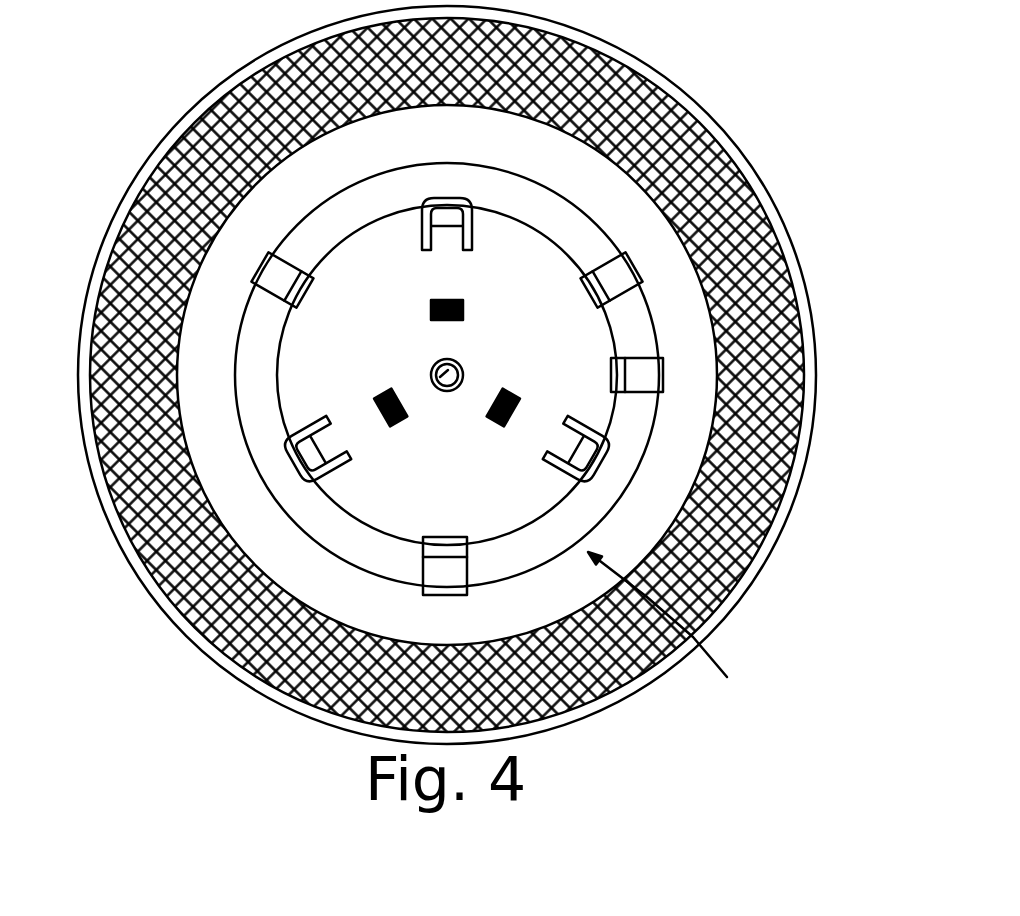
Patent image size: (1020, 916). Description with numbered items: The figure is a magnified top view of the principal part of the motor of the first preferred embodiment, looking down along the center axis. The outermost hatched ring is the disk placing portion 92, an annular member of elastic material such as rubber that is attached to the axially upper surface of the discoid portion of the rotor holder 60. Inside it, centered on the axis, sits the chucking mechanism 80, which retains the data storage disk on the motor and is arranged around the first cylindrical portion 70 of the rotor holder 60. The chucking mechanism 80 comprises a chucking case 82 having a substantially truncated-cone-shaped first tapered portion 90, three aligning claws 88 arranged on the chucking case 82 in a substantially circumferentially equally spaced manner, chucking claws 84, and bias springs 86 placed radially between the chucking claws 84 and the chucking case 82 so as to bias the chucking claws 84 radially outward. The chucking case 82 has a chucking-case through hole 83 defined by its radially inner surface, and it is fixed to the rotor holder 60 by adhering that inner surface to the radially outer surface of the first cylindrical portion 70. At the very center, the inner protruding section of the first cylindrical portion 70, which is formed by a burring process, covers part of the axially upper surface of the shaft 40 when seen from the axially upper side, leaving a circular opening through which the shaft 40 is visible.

The shaft 40 is at (433, 388).
The rotor holder 60 is at (673, 427).
The first cylindrical portion 70 is at (436, 364).
The chucking mechanism 80 is at (676, 634).
The chucking case 82 is at (500, 523).
The chucking-case through hole 83 is at (432, 371).
The chucking claw 84 is at (432, 200).
The bias spring 86 is at (458, 297).
The aligning claw 88 is at (640, 253).
The first tapered portion 90 is at (640, 372).
The disk placing portion 92 is at (716, 136).